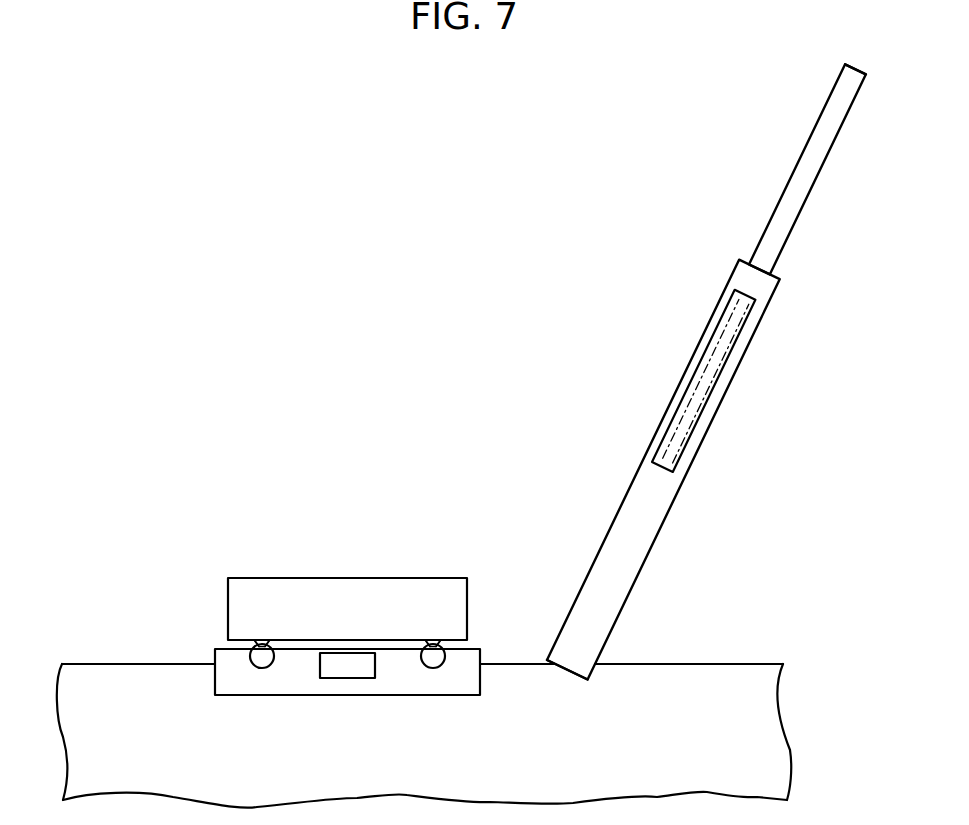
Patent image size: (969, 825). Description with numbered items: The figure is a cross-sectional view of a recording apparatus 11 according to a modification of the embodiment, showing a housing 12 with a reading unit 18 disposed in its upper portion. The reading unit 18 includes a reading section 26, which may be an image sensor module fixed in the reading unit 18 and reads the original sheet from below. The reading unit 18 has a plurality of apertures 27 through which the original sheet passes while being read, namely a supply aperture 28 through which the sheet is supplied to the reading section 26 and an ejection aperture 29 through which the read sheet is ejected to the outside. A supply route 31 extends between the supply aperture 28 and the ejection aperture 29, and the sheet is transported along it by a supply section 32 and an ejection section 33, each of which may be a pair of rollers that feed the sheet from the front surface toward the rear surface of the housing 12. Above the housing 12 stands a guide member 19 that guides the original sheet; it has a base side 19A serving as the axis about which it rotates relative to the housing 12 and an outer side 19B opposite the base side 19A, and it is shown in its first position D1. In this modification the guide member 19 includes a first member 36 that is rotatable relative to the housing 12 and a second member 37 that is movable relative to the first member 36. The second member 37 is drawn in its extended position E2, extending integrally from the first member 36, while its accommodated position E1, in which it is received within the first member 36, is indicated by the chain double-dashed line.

The recording apparatus 11 is at (161, 259).
The housing 12 is at (88, 663).
The reading unit 18 is at (208, 392).
The guide member 19 is at (706, 395).
The base side 19A is at (593, 678).
The outer side 19B is at (842, 75).
The reading section 26 is at (347, 670).
The apertures 27 is at (347, 644).
The supply aperture 28 is at (232, 642).
The ejection aperture 29 is at (462, 642).
The supply route 31 is at (368, 640).
The supply section 32 is at (262, 660).
The ejection section 33 is at (433, 660).
The first member 36 is at (629, 489).
The second member 37 is at (768, 228).
The first position D1 is at (731, 187).
The accommodated position E1 is at (655, 360).
The extended position E2 is at (784, 121).